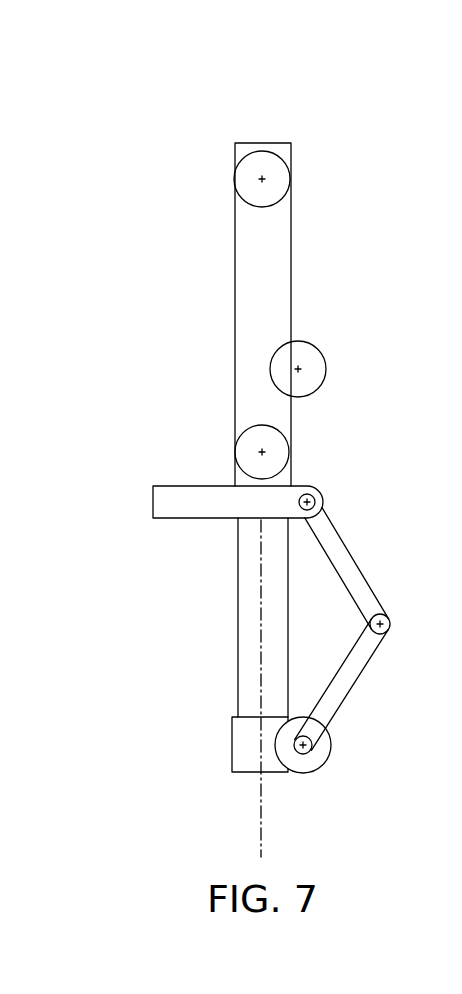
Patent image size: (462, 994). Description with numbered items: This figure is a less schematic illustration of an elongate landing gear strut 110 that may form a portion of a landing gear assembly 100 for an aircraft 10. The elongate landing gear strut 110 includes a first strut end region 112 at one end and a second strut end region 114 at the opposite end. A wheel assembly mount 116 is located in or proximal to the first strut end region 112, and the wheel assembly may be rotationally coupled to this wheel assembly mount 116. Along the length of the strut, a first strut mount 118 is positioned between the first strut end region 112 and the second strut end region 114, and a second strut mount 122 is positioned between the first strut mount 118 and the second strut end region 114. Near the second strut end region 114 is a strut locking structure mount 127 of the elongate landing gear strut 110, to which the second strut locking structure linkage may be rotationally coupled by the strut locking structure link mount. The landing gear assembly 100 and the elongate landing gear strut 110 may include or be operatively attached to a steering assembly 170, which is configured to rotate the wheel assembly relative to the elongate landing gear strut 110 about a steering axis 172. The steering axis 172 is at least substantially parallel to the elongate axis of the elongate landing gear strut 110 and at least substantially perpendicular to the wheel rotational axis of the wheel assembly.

The aircraft 10 is at (377, 75).
The landing gear assembly 100 is at (372, 127).
The second strut end region 114 is at (197, 157).
The strut locking structure mount 127 is at (277, 180).
The second strut mount 122 is at (312, 365).
The first strut mount 118 is at (247, 447).
The elongate landing gear strut 110 is at (236, 585).
The steering assembly 170 is at (348, 520).
The wheel assembly mount 116 is at (331, 750).
The first strut end region 112 is at (204, 764).
The steering axis 172 is at (262, 820).